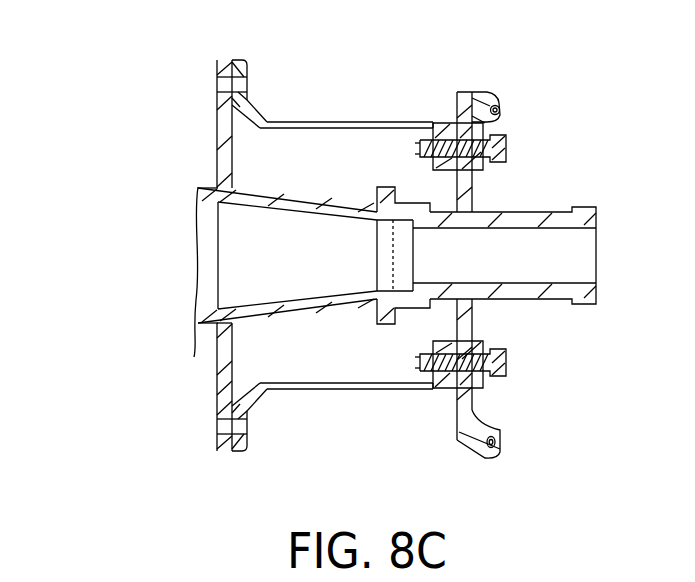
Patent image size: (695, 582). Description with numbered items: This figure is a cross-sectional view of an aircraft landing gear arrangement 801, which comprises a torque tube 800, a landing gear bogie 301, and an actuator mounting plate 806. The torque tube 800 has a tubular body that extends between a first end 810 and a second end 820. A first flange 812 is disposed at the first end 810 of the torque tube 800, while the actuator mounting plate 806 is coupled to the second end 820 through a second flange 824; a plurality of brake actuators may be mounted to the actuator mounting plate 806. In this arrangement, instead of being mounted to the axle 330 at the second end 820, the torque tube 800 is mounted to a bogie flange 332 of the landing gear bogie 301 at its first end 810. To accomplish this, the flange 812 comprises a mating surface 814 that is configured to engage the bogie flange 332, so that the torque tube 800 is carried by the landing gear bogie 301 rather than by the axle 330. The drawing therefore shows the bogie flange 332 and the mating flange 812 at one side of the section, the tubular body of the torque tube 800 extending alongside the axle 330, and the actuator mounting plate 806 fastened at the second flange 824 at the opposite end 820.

The aircraft landing gear arrangement 801 is at (108, 39).
The torque tube 800 is at (383, 122).
The first end 810 is at (240, 58).
The flange 812 is at (233, 453).
The mating surface 814 is at (222, 406).
The bogie flange 332 is at (222, 453).
The landing gear bogie 301 is at (197, 312).
The axle 330 is at (582, 293).
The second end 820 is at (447, 122).
The actuator mounting plate 806 is at (500, 110).
The flange 824 is at (420, 160).